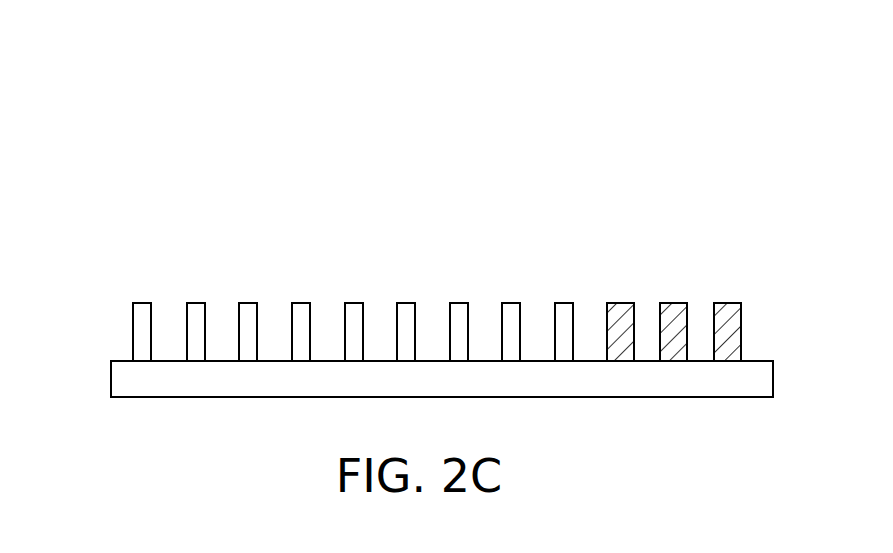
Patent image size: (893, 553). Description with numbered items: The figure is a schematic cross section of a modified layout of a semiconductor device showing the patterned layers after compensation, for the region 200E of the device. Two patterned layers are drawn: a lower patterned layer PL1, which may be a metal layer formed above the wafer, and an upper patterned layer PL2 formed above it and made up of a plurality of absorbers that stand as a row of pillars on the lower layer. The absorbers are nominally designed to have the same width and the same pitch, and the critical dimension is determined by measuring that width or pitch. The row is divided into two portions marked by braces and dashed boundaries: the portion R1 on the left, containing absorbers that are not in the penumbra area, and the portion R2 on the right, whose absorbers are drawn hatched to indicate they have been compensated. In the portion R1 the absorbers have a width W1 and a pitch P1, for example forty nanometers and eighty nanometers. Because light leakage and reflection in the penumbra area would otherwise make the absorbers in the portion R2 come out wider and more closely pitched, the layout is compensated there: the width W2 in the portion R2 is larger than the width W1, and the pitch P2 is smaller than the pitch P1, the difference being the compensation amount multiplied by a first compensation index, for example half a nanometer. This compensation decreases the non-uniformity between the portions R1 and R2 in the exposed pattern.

The region of the semiconductor device 200E is at (202, 89).
The patterned layer PL1 is at (92, 361).
The patterned layer PL2 is at (92, 305).
The portion R1 is at (590, 361).
The portion R2 is at (773, 361).
The width W1 is at (187, 303).
The width W2 is at (607, 303).
The pitch P1 is at (213, 273).
The pitch P2 is at (642, 273).